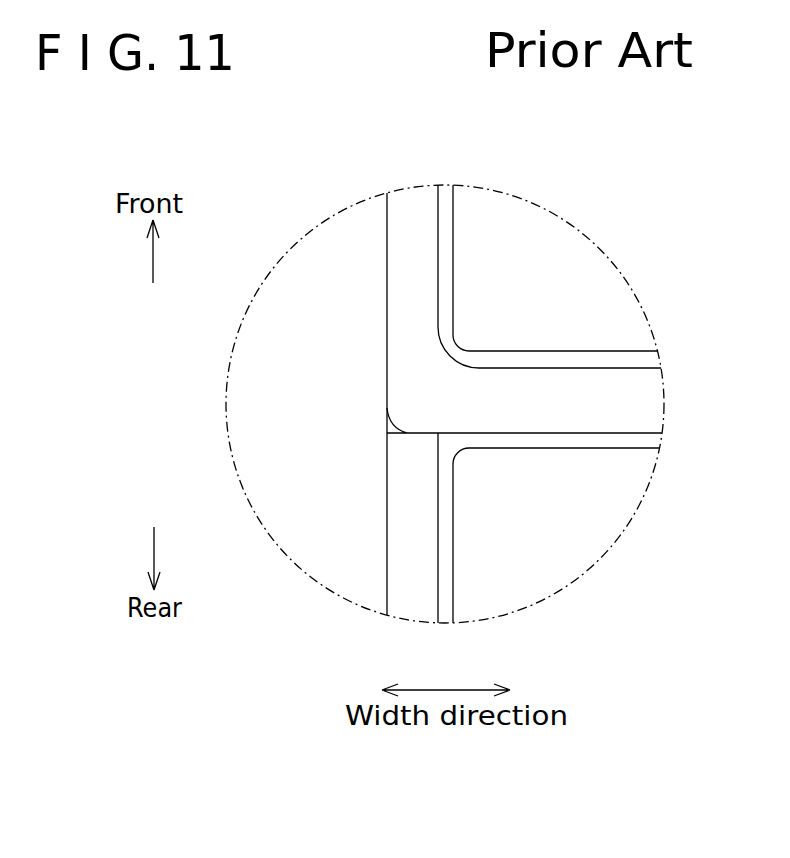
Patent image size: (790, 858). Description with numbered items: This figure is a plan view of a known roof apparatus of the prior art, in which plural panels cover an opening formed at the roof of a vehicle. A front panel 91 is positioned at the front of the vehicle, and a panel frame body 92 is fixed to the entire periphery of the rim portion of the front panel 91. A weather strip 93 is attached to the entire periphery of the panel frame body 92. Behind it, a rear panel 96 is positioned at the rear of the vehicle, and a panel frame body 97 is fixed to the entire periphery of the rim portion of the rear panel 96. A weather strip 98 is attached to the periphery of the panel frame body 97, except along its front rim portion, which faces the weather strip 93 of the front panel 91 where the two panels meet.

The front panel 91 is at (487, 205).
The panel frame body 92 is at (548, 350).
The weather strip 93 is at (413, 200).
The rear panel 96 is at (517, 598).
The panel frame body 97 is at (553, 450).
The weather strip 98 is at (403, 607).